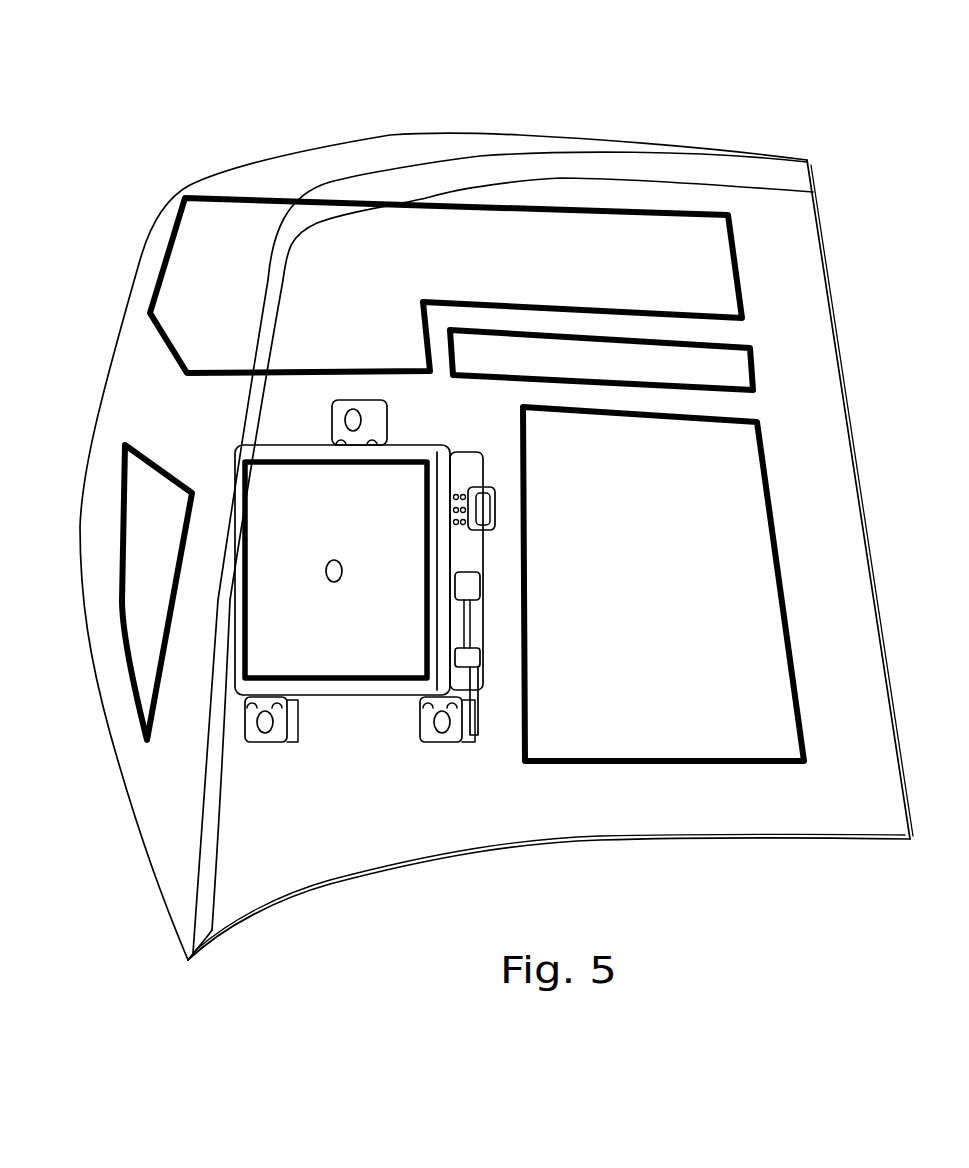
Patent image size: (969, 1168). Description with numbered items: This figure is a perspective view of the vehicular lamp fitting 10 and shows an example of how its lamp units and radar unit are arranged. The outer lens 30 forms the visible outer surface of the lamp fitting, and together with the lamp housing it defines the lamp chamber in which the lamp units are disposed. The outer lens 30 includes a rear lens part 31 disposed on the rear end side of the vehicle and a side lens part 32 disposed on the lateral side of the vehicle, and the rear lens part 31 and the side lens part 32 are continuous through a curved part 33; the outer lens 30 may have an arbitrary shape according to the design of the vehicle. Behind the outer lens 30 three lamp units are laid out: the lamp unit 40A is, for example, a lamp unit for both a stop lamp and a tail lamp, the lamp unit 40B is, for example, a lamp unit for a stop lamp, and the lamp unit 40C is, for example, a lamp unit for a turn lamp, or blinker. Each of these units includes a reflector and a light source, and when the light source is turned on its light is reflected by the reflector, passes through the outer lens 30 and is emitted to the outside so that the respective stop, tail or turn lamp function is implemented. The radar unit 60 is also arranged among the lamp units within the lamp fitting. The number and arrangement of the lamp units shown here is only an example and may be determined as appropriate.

The vehicular lamp fitting 10 is at (540, 97).
The outer lens 30 is at (446, 145).
The rear lens part 31 is at (671, 200).
The side lens part 32 is at (100, 404).
The curved part 33 is at (203, 827).
The lamp unit 40A is at (501, 200).
The lamp unit 40B is at (770, 378).
The lamp unit 40C is at (793, 580).
The radar unit 60 is at (307, 455).